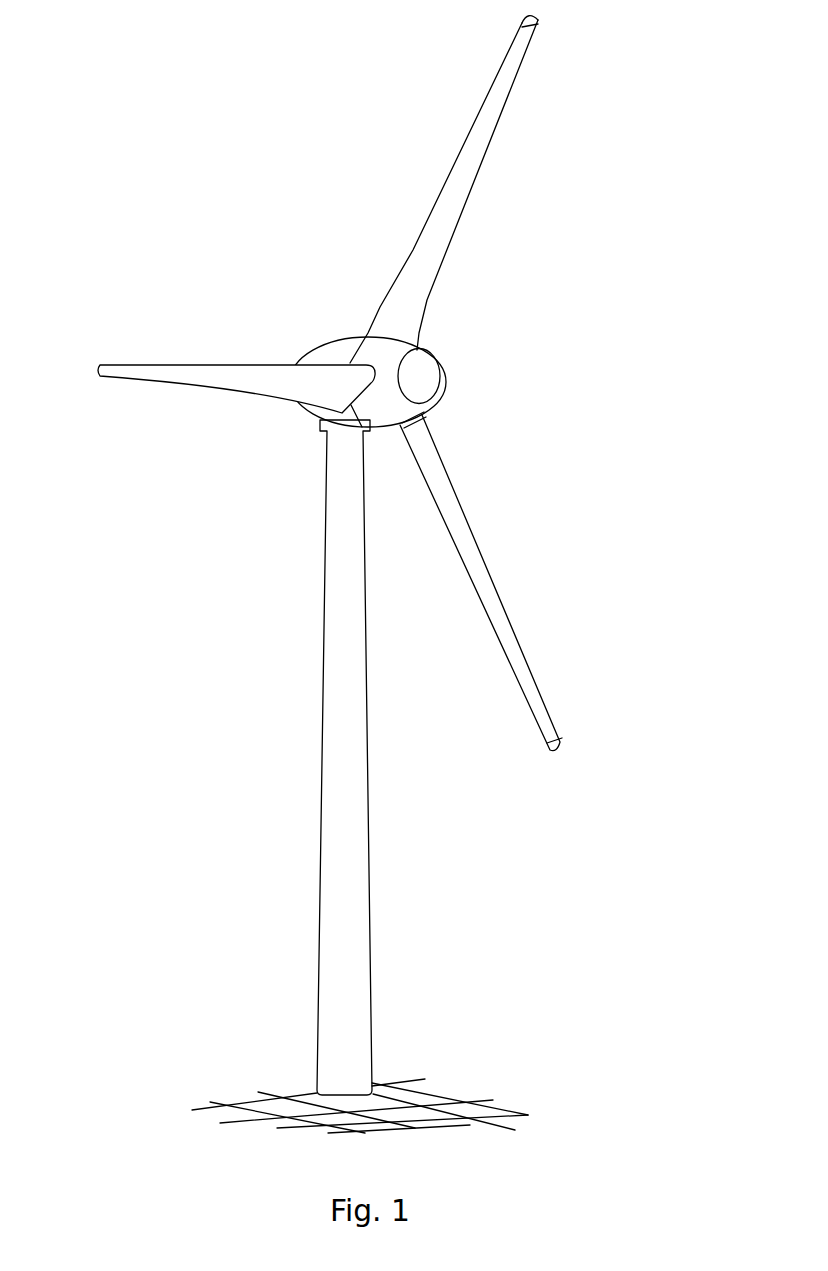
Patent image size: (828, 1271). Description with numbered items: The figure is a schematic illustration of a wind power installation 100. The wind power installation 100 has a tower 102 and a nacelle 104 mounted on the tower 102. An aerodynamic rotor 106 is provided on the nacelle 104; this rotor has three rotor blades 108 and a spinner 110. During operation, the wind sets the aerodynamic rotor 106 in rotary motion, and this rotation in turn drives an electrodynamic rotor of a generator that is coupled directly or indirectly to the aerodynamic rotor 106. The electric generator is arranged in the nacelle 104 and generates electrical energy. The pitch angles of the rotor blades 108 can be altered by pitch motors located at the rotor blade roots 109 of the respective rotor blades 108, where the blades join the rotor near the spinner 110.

The wind power installation 100 is at (283, 503).
The tower 102 is at (357, 842).
The nacelle 104 is at (341, 356).
The aerodynamic rotor 106 is at (508, 302).
The rotor blades 108 is at (182, 367).
The rotor blade roots 109 is at (421, 413).
The spinner 110 is at (425, 378).